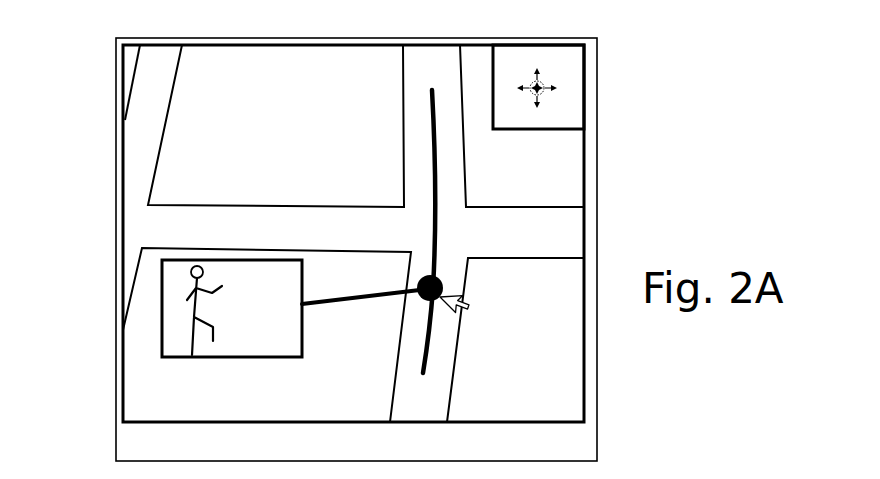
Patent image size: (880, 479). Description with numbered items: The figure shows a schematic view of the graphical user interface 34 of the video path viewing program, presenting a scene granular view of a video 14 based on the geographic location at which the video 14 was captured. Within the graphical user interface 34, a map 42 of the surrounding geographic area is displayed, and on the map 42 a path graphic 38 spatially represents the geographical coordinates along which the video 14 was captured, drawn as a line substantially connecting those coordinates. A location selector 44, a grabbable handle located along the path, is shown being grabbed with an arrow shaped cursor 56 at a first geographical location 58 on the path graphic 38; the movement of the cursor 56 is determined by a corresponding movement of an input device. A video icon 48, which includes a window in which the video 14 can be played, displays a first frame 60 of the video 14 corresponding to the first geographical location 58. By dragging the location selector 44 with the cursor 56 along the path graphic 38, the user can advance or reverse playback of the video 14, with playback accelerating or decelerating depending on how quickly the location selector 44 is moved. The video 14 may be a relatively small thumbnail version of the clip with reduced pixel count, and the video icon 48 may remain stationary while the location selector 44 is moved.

The video 14 is at (177, 300).
The graphical user interface 34 is at (597, 172).
The path graphic 38 is at (432, 147).
The map 42 is at (228, 108).
The location selector 44 is at (425, 278).
The video icon 48 is at (162, 342).
The cursor 56 is at (457, 316).
The first geographical location 58 is at (437, 278).
The first frame 60 is at (242, 277).